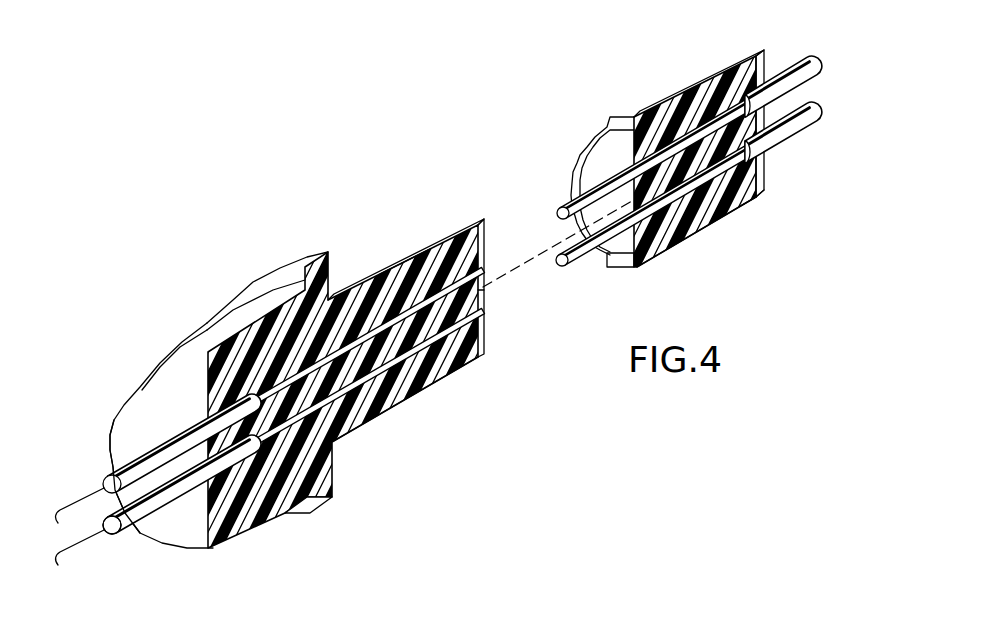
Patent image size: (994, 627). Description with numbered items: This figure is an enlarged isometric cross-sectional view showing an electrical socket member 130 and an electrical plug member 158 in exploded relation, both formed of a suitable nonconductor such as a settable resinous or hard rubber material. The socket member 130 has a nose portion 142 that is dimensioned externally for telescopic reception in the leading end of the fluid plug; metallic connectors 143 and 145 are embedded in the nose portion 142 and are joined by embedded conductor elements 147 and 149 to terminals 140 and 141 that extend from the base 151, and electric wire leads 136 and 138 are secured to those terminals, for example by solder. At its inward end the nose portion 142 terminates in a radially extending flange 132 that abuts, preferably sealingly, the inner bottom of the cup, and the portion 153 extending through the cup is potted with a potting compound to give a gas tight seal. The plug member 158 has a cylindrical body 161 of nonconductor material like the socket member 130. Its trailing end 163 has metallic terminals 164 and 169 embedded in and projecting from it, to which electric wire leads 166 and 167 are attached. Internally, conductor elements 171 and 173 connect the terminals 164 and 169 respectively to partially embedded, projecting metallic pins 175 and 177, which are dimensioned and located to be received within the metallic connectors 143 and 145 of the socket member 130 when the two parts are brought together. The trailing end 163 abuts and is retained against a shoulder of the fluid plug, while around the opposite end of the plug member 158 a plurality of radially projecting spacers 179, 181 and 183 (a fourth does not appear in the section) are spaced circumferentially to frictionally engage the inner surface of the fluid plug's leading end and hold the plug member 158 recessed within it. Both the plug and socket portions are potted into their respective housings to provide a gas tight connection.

The electrical socket member 130 is at (251, 262).
The radially extending flange 132 is at (295, 262).
The electric wire lead 136 is at (88, 500).
The electric wire lead 138 is at (92, 540).
The terminal 140 is at (130, 518).
The terminal 141 is at (134, 468).
The nose portion 142 is at (363, 300).
The metallic connector 143 is at (478, 345).
The metallic connector 145 is at (478, 232).
The conductor element 147 is at (398, 397).
The conductor element 149 is at (400, 303).
The base 151 is at (163, 385).
The portion extending through the cup 153 is at (222, 353).
The electrical plug member 158 is at (649, 90).
The cylindrical body 161 is at (708, 205).
The trailing end 163 is at (763, 152).
The metallic terminal 164 is at (790, 121).
The electric wire lead 166 is at (851, 92).
The electric wire lead 167 is at (851, 40).
The metallic terminal 169 is at (784, 82).
The conductor element 171 is at (747, 184).
The conductor element 173 is at (697, 93).
The metallic pin 175 is at (574, 263).
The metallic pin 177 is at (574, 164).
The radially projecting spacer 179 is at (633, 268).
The radially projecting spacer 181 is at (568, 197).
The radially projecting spacer 183 is at (615, 130).